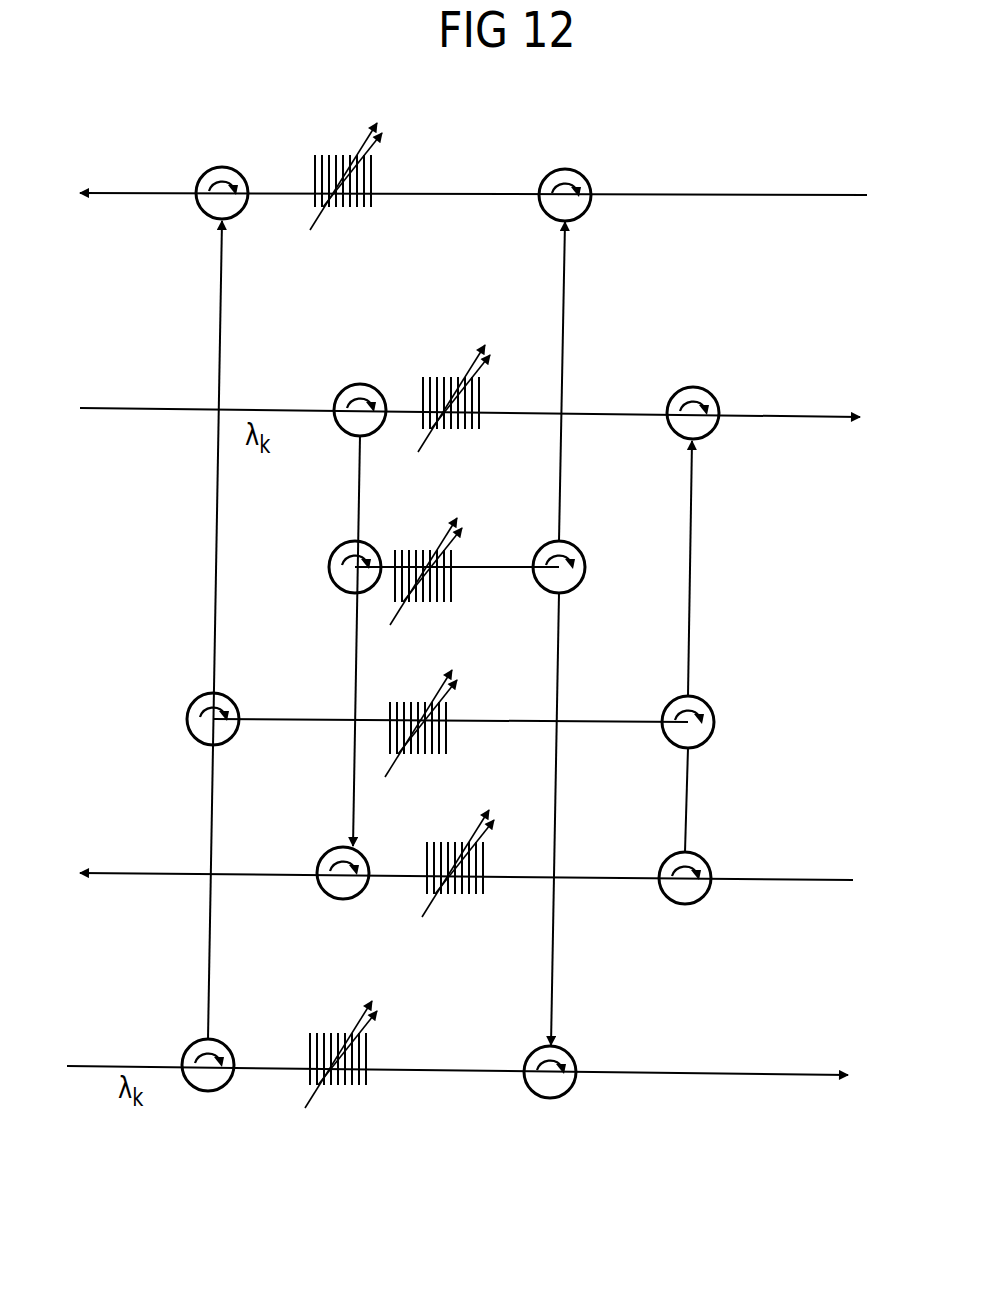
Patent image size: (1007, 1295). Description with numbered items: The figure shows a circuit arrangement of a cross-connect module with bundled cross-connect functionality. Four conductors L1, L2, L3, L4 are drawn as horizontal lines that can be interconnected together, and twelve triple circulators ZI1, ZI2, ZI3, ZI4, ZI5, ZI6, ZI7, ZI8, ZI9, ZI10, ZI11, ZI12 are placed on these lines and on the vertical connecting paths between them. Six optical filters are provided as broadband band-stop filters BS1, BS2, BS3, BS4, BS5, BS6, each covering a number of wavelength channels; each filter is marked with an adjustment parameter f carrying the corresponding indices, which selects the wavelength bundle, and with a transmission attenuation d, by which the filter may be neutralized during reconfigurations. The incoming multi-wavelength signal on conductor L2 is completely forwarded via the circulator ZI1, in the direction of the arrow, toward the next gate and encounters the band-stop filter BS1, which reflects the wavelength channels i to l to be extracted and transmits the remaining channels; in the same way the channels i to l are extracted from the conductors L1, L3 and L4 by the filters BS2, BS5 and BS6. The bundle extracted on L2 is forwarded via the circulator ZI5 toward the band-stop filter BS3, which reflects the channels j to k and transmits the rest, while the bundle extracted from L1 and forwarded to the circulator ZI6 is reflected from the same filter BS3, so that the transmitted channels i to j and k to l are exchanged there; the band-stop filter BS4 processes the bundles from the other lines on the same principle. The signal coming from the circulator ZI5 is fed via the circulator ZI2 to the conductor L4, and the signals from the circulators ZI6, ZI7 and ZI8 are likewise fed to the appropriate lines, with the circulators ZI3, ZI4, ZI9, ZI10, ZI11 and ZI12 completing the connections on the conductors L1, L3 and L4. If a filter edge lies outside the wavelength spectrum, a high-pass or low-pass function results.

The optical circulator ZI1 is at (575, 221).
The optical circulator ZI2 is at (232, 219).
The optical circulator ZI3 is at (346, 435).
The optical circulator ZI4 is at (678, 438).
The optical circulator ZI5 is at (573, 593).
The optical circulator ZI6 is at (341, 592).
The optical circulator ZI7 is at (700, 748).
The optical circulator ZI8 is at (196, 744).
The optical circulator ZI9 is at (682, 904).
The optical circulator ZI10 is at (331, 898).
The optical circulator ZI11 is at (208, 1091).
The optical circulator ZI12 is at (548, 1098).
The optical band-stop filter BS1 is at (352, 210).
The optical band-stop filter BS2 is at (460, 429).
The optical band-stop filter BS3 is at (430, 599).
The optical band-stop filter BS4 is at (430, 752).
The optical band-stop filter BS5 is at (460, 893).
The optical band-stop filter BS6 is at (350, 1084).
The conductor L1 is at (469, 392).
The conductor L2 is at (473, 179).
The conductor L3 is at (457, 1051).
The conductor L4 is at (466, 862).